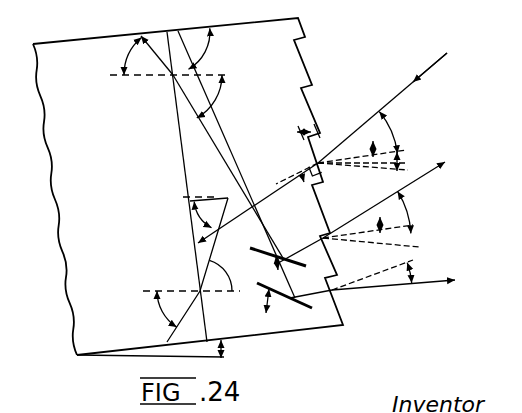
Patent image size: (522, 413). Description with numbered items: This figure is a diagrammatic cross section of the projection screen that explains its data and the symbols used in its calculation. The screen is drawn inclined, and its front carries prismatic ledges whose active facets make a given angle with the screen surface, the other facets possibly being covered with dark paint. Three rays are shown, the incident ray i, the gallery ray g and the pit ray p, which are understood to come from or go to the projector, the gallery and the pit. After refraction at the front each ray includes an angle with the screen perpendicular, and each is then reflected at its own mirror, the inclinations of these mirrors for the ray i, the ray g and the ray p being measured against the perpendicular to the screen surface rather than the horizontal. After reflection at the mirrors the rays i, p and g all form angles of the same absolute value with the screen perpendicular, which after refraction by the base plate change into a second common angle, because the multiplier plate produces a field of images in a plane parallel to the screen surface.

The incident ray i is at (321, 151).
The gallery ray g is at (351, 209).
The pit ray p is at (358, 284).